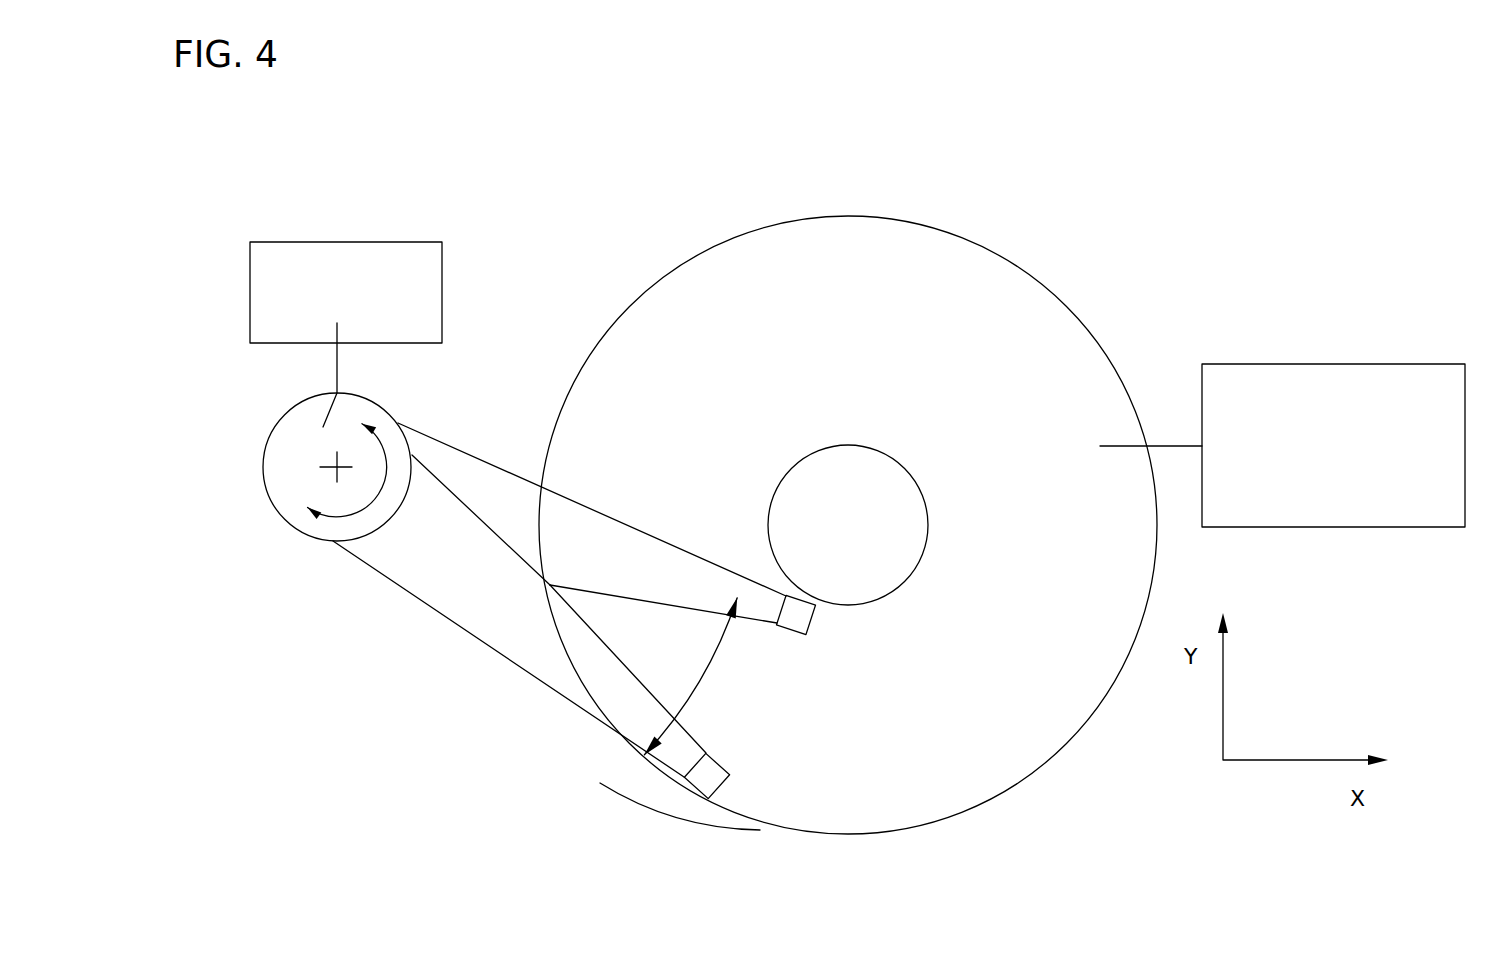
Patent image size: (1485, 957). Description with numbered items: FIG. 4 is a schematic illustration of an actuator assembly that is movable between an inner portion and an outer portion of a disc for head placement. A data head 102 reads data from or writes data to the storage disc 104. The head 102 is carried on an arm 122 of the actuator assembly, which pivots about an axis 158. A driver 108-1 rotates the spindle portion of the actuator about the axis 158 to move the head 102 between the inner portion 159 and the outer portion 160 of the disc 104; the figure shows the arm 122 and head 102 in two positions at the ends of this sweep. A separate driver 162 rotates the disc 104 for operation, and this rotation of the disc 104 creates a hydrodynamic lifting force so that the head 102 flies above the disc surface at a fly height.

The storage disc 104 is at (974, 230).
The driver 108-1 is at (323, 242).
The axis 158 is at (332, 465).
The inner portion of the disc 159 is at (771, 547).
The outer portion of the disc 160 is at (728, 812).
The driver 162 is at (1243, 364).
The actuator arm 122 is at (643, 542).
The data head 102 is at (798, 612).